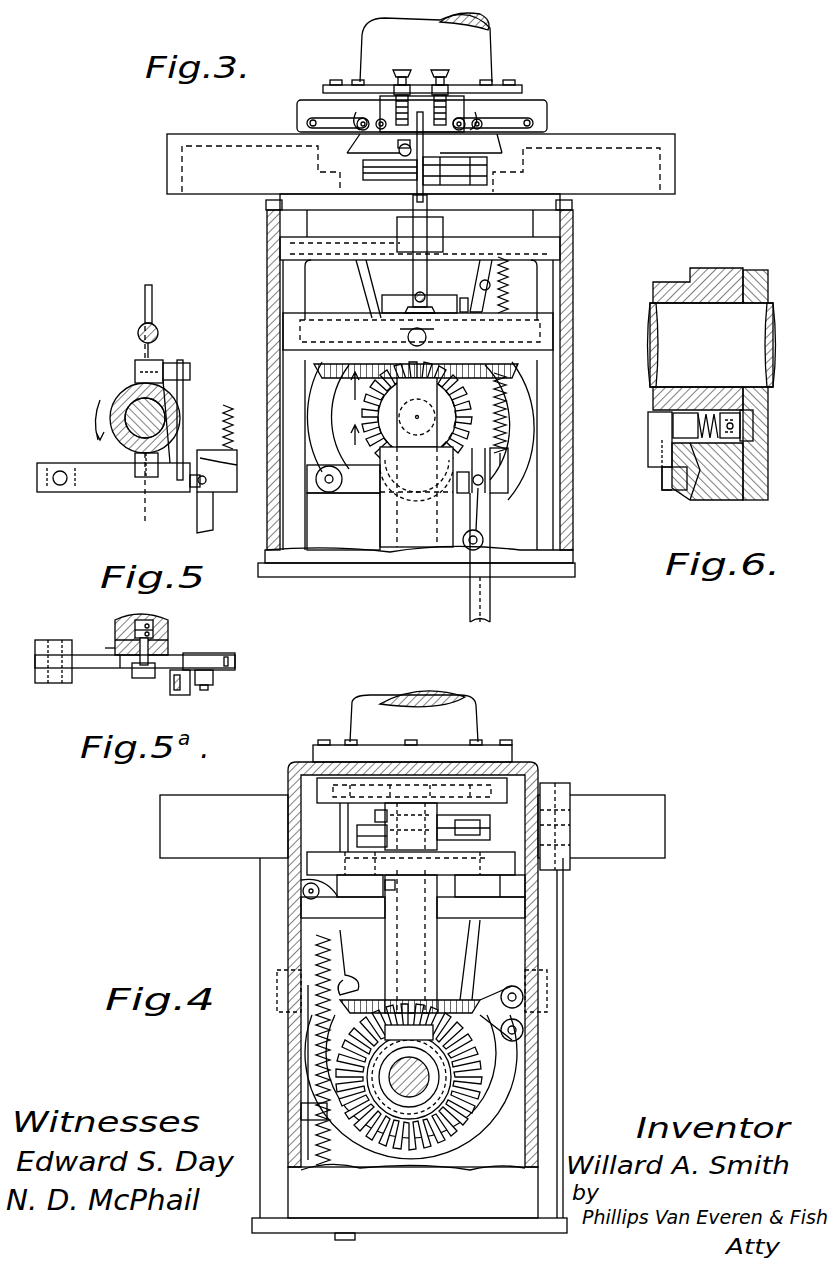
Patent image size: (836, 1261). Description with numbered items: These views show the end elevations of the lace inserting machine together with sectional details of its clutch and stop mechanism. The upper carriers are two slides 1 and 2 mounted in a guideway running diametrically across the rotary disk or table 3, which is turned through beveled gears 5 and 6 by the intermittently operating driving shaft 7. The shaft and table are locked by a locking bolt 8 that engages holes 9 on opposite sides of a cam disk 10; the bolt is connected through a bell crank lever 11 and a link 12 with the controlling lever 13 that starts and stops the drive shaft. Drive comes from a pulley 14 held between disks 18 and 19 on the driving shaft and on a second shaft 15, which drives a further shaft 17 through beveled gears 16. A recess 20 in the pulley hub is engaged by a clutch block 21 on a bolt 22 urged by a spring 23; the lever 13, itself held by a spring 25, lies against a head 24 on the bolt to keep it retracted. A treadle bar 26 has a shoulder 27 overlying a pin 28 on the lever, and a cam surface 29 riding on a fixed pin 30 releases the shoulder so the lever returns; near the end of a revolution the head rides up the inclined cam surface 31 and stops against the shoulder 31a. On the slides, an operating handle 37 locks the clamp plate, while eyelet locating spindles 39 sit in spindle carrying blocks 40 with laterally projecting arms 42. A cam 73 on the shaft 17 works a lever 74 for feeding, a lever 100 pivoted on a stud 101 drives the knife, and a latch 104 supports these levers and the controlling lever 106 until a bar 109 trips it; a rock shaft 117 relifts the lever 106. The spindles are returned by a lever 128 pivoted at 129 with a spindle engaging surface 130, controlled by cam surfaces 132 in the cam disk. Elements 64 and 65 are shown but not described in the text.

In FIG. 4, the upper carrying slide 1 is at (360, 815).
In FIG. 3, the upper carrying slide 2 is at (360, 138).
In FIG. 3, the rotary disk or table 3 is at (615, 135).
In FIG. 4, the rotary disk or table 3 is at (638, 800).
In FIG. 3, the beveled gear 5 is at (517, 372).
In FIG. 3, the beveled gear 6 is at (472, 405).
In FIG. 5, the beveled gear 6 is at (132, 424).
In FIG. 3, the driving shaft 7 is at (440, 418).
In FIG. 5, the driving shaft 7 is at (140, 400).
In FIG. 6, the driving shaft 7 is at (758, 360).
In FIG. 5, the locking bolt 8 is at (155, 332).
In FIG. 3, the holes 9 is at (425, 339).
In FIG. 3, the cam disk 10 is at (553, 332).
In FIG. 4, the cam disk 10 is at (285, 978).
In FIG. 5, the bell crank lever 11 is at (150, 362).
In FIG. 5, the link 12 is at (183, 385).
In FIG. 5A, the link 12 is at (178, 696).
In FIG. 3, the controlling lever 13 is at (343, 494).
In FIG. 5, the controlling lever 13 is at (225, 488).
In FIG. 5A, the controlling lever 13 is at (235, 662).
In FIG. 6, the controlling lever 13 is at (665, 488).
In FIG. 3, the pulley 14 is at (350, 480).
In FIG. 5A, the pulley 14 is at (133, 615).
In FIG. 6, the pulley 14 is at (765, 285).
In FIG. 4, the pulley 14 is at (482, 1160).
In FIG. 4, the second shaft 15 is at (418, 1075).
In FIG. 4, the beveled gears 16 is at (455, 1062).
In FIG. 4, the shaft 17 is at (420, 957).
In FIG. 3, the disk 18 is at (322, 420).
In FIG. 5A, the disk 18 is at (115, 628).
In FIG. 6, the disk 18 is at (705, 270).
In FIG. 4, the disk 19 is at (488, 1113).
In FIG. 5A, the recess 20 is at (150, 620).
In FIG. 6, the recess 20 is at (752, 418).
In FIG. 5A, the clutch block 21 is at (153, 628).
In FIG. 6, the clutch block 21 is at (740, 428).
In FIG. 5A, the bolt 22 is at (150, 648).
In FIG. 6, the bolt 22 is at (675, 425).
In FIG. 5A, the spring 23 is at (120, 640).
In FIG. 6, the spring 23 is at (690, 500).
In FIG. 5, the head 24 is at (140, 470).
In FIG. 5A, the head 24 is at (144, 678).
In FIG. 6, the head 24 is at (655, 430).
In FIG. 3, the spring 25 is at (506, 435).
In FIG. 5, the spring 25 is at (229, 405).
In FIG. 3, the bar 26 is at (470, 590).
In FIG. 5, the bar 26 is at (210, 528).
In FIG. 5A, the bar 26 is at (213, 680).
In FIG. 3, the shoulder 27 is at (486, 460).
In FIG. 5, the shoulder 27 is at (233, 445).
In FIG. 3, the pin 28 is at (416, 497).
In FIG. 5, the pin 28 is at (200, 490).
In FIG. 5A, the pin 28 is at (205, 692).
In FIG. 3, the cam surface 29 is at (498, 478).
In FIG. 3, the fixed pin 30 is at (480, 545).
In FIG. 5, the inclined cam surface 31 is at (172, 460).
In FIG. 5A, the inclined cam surface 31 is at (165, 665).
In FIG. 5, the shoulder 31a is at (135, 472).
In FIG. 5A, the shoulder 31a is at (128, 668).
In FIG. 6, the shoulder 31a is at (660, 475).
In FIG. 3, the operating handle 37 is at (307, 123).
In FIG. 3, the spindles 39 is at (423, 95).
In FIG. 3, the spindle carrying block 40 is at (415, 182).
In FIG. 3, the laterally projecting arms 42 is at (390, 180).
In FIG. 4, the plate 64 is at (490, 795).
In FIG. 4, the plate 65 is at (515, 810).
In FIG. 4, the cam 73 is at (470, 862).
In FIG. 4, the lever 74 is at (505, 840).
In FIG. 4, the lever 100 is at (490, 985).
In FIG. 4, the stud 101 is at (516, 994).
In FIG. 3, the latch 104 is at (506, 293).
In FIG. 4, the latch 104 is at (345, 965).
In FIG. 4, the controlling lever 106 is at (516, 1030).
In FIG. 3, the bar 109 is at (395, 165).
In FIG. 4, the rock shaft 117 is at (330, 897).
In FIG. 3, the lever 128 is at (422, 272).
In FIG. 3, the pivot 129 is at (420, 247).
In FIG. 3, the spindle engaging surface 130 is at (430, 195).
In FIG. 3, the cam surfaces 132 is at (332, 318).